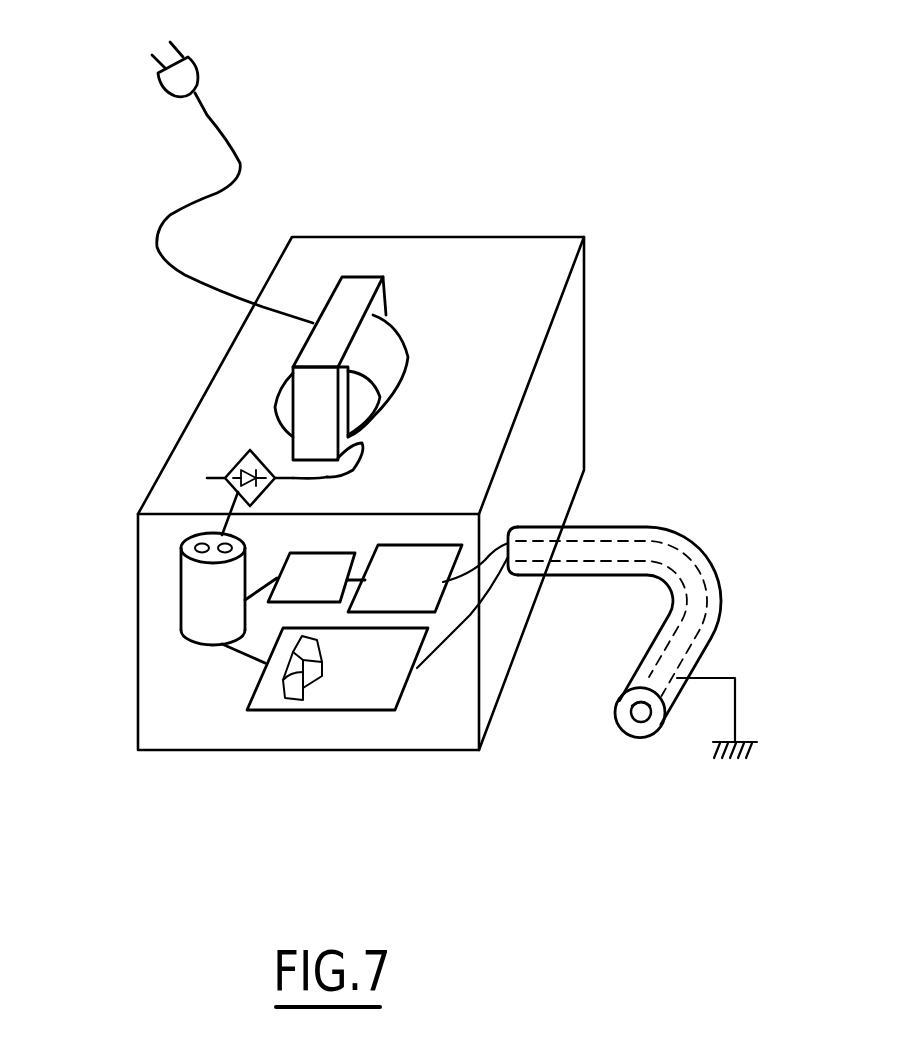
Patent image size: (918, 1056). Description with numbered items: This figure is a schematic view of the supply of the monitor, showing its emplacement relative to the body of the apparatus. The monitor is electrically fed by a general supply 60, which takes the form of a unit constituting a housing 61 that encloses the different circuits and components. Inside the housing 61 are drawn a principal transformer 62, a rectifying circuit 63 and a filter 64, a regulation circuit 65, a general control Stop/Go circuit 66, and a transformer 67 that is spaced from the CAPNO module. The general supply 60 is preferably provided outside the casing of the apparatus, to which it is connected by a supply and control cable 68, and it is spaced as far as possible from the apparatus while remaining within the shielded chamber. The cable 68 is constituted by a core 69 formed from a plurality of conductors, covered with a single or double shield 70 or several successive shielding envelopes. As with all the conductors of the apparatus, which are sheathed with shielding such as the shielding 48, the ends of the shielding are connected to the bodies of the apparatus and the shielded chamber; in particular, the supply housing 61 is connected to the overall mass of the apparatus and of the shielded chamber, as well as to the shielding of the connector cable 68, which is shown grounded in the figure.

The shielding 48 is at (693, 667).
The general supply 60 is at (458, 222).
The housing 61 is at (542, 258).
The principal transformer 62 is at (359, 292).
The rectifying circuit 63 is at (216, 457).
The filter 64 is at (198, 587).
The regulation circuit 65 is at (325, 565).
The general control Stop/Go circuit 66 is at (423, 563).
The transformer 67 is at (286, 722).
The supply and control cable 68 is at (665, 518).
The core 69 is at (628, 703).
The shield 70 is at (664, 741).